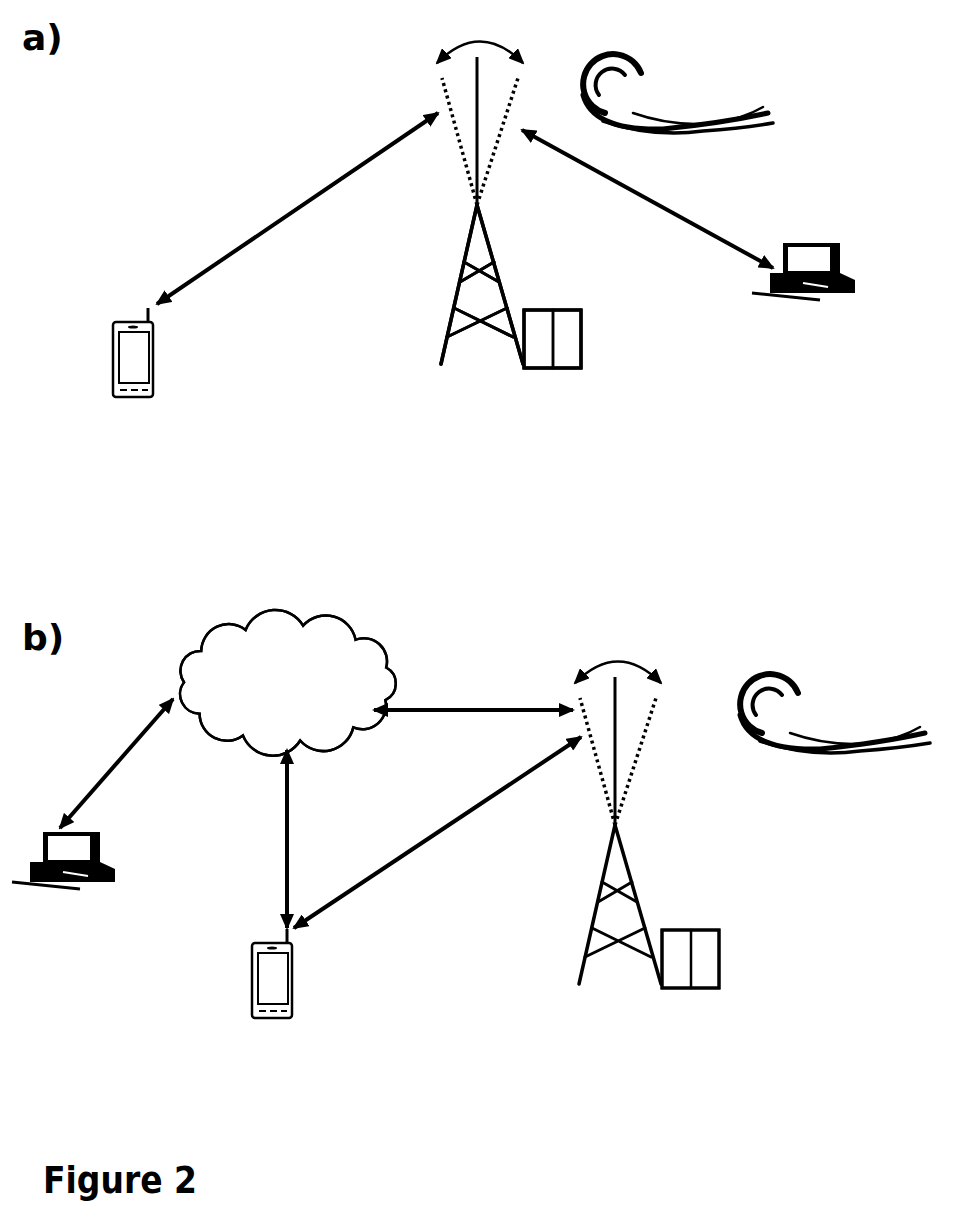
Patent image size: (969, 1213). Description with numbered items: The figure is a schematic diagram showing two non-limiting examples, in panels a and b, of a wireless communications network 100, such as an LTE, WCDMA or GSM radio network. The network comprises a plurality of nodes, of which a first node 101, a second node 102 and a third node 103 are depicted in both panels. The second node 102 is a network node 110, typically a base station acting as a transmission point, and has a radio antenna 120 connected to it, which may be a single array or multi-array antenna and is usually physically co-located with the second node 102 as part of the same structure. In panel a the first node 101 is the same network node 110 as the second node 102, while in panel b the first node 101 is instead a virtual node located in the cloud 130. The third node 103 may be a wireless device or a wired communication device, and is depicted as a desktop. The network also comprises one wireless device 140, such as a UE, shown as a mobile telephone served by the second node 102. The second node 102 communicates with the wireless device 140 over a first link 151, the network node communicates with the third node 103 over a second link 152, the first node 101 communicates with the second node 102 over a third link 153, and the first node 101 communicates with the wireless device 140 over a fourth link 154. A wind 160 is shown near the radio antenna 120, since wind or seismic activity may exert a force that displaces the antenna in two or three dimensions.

The wireless communications network 100 is at (483, 530).
The first node 101 is at (424, 480).
The second node 102 is at (557, 368).
The third node 103 is at (775, 298).
The network node 110 is at (692, 673).
The radio antenna 120 is at (478, 170).
The cloud 130 is at (288, 683).
The wireless device 140 is at (144, 397).
The first link 151 is at (268, 230).
The second link 152 is at (663, 190).
The third link 153 is at (432, 708).
The fourth link 154 is at (285, 780).
The wind 160 is at (633, 58).